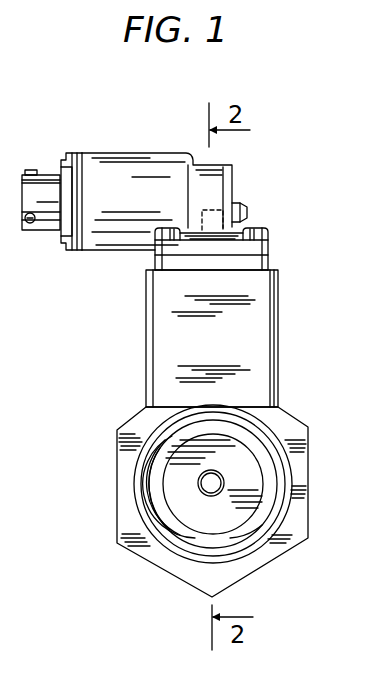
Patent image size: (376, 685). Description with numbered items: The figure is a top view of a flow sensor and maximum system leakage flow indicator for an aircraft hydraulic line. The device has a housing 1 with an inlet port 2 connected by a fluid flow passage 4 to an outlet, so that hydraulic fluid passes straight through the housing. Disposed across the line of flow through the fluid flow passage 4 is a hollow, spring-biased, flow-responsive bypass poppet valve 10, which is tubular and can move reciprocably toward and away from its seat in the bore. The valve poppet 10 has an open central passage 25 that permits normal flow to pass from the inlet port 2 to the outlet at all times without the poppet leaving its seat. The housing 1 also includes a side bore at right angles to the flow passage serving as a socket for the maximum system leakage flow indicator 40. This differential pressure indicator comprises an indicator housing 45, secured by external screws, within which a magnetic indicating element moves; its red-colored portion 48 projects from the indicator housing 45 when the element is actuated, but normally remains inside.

The housing 1 is at (127, 400).
The inlet port 2 is at (167, 481).
The fluid flow passage 4 is at (185, 503).
The bypass poppet valve 10 is at (235, 452).
The open central passage 25 is at (211, 489).
The maximum system leakage flow indicator 40 is at (278, 226).
The indicator housing 45 is at (267, 263).
The red-colored portion of indicating element 48 is at (209, 211).